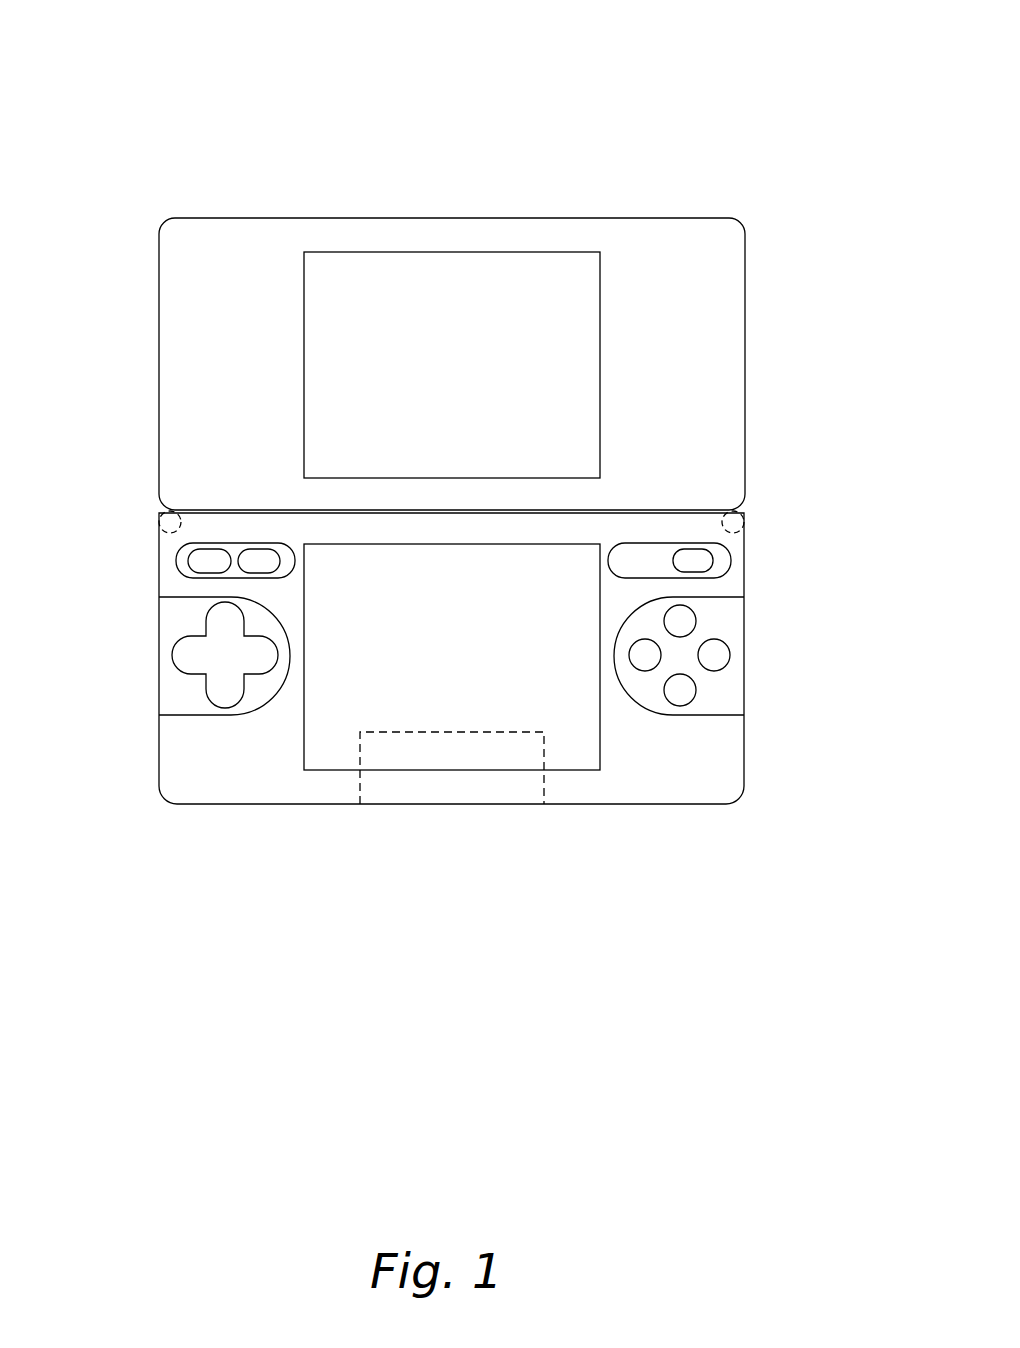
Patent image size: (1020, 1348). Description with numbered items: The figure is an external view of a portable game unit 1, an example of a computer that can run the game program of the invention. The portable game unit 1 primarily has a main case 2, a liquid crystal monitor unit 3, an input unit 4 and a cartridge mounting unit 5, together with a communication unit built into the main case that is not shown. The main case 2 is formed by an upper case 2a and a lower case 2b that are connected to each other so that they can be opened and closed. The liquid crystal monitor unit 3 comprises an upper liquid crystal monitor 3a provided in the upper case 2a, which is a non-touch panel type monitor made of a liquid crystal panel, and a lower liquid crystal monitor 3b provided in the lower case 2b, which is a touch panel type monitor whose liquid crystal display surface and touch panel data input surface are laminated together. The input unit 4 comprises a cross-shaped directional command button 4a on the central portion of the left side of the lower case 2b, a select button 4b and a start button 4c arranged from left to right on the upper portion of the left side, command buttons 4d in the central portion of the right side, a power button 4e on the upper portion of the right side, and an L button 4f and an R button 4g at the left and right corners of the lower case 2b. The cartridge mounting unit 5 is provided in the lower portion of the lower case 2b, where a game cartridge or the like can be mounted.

The portable game unit 1 is at (743, 137).
The main case 2 is at (760, 338).
The upper case 2a is at (698, 400).
The lower case 2b is at (730, 755).
The liquid crystal monitor unit 3 is at (433, 243).
The upper liquid crystal monitor 3a is at (488, 289).
The lower liquid crystal monitor 3b is at (578, 748).
The input unit 4 is at (208, 750).
The cross-shaped directional command button 4a is at (187, 657).
The select button 4b is at (192, 558).
The start button 4c is at (257, 567).
The command buttons 4d is at (722, 628).
The power button 4e is at (700, 562).
The L button 4f is at (160, 518).
The R button 4g is at (745, 516).
The cartridge mounting unit 5 is at (543, 785).